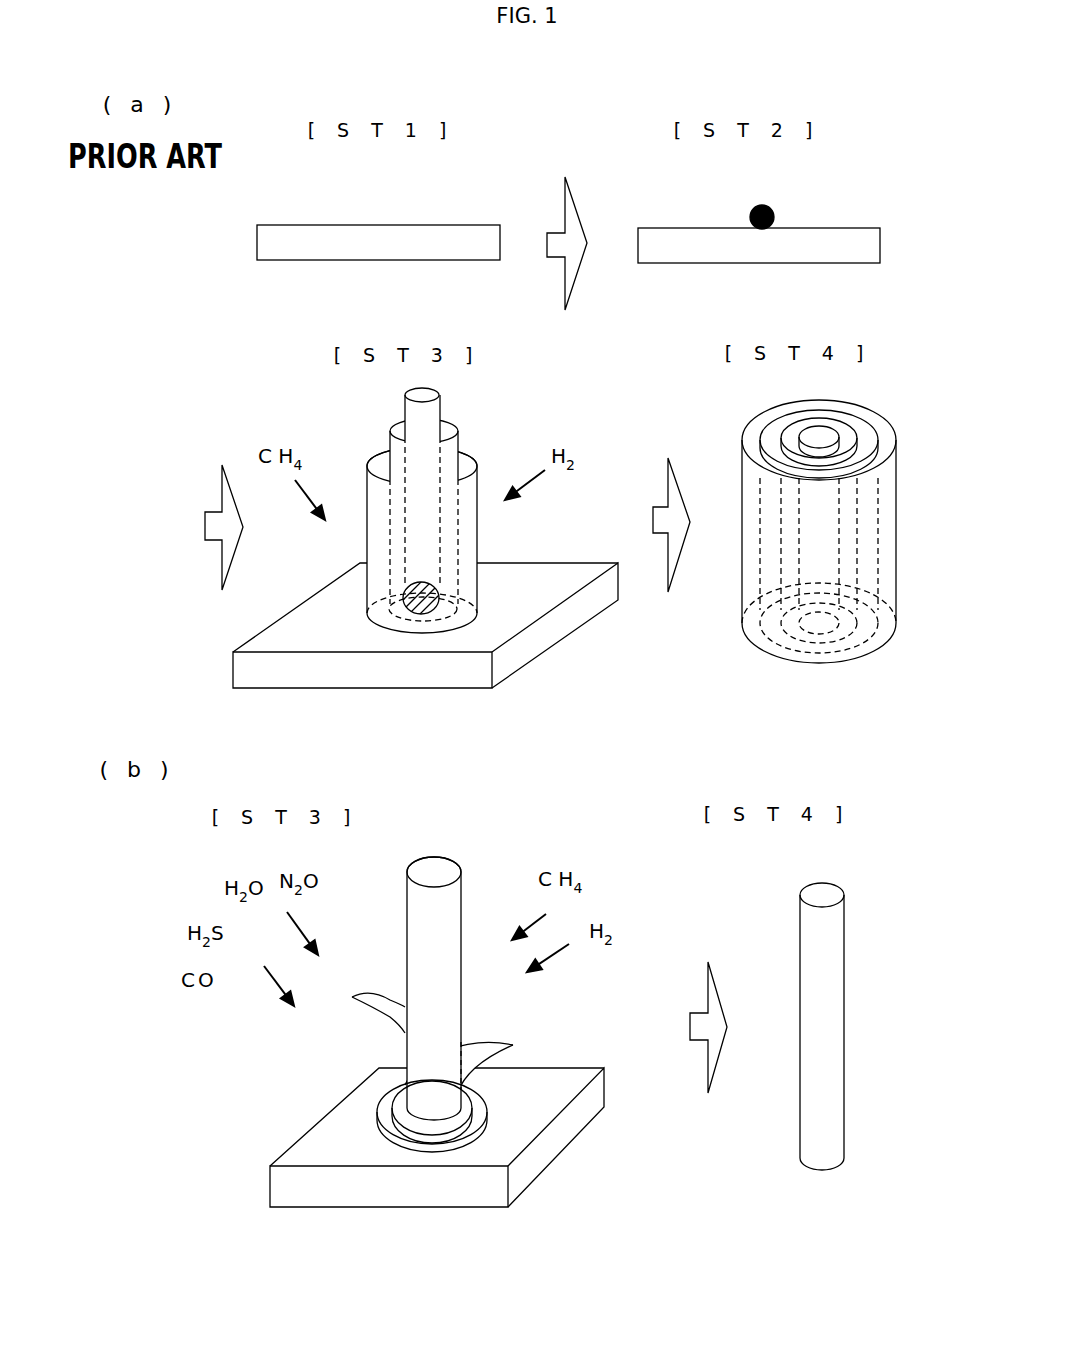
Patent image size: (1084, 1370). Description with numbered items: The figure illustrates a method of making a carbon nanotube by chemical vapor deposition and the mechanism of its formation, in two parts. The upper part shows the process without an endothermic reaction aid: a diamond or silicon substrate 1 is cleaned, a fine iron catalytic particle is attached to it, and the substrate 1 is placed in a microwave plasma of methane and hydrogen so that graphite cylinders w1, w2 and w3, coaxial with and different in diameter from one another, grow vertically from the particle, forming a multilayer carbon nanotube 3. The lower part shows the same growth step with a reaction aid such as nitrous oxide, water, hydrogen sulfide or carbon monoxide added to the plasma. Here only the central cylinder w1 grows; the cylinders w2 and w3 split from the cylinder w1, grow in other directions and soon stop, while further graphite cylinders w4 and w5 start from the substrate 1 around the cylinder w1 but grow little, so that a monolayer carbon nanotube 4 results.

The substrate 1 is at (392, 224).
The multilayer carbon nanotube 3 is at (906, 561).
The monolayer carbon nanotube 4 is at (854, 1060).
The cylinder w1 is at (405, 410).
The cylinder w2 is at (458, 432).
The cylinder w3 is at (478, 542).
The graphite cylinder w4 is at (750, 425).
The graphite cylinder w5 is at (482, 1110).